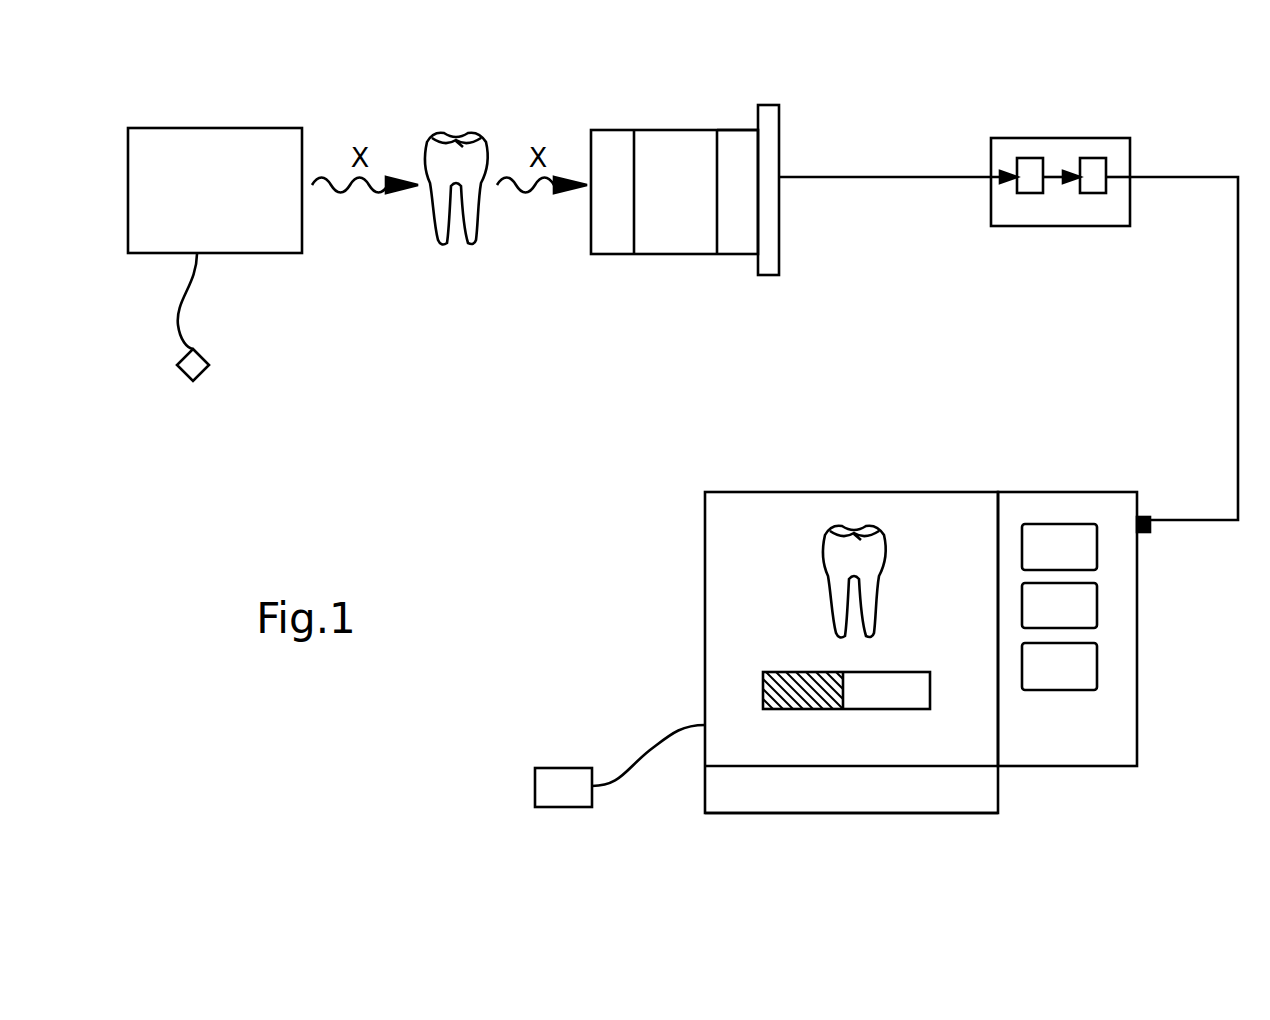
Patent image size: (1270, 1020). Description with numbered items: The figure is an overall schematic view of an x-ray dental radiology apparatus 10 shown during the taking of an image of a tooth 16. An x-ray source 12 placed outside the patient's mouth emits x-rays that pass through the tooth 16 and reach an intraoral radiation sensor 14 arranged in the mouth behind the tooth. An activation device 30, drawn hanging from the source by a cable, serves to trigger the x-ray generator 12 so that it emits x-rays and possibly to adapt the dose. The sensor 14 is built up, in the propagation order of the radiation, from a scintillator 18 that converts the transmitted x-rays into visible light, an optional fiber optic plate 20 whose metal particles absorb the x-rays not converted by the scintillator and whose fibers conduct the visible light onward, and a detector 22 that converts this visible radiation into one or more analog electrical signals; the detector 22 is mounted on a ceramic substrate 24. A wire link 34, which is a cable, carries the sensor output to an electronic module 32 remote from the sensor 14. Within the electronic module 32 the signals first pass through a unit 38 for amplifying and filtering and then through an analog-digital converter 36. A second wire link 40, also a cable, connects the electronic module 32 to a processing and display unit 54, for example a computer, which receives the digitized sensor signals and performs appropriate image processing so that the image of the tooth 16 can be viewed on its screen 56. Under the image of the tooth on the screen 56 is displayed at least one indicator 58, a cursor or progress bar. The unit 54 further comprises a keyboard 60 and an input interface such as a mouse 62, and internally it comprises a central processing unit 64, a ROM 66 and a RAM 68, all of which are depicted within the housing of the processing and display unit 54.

The x-ray dental radiology apparatus 10 is at (480, 392).
The x-ray source 12 is at (240, 128).
The intraoral radiation sensor 14 is at (675, 209).
The tooth 16 is at (446, 245).
The scintillator 18 is at (612, 130).
The fiber optic plate 20 is at (668, 130).
The detector 22 is at (735, 130).
The ceramic substrate 24 is at (780, 137).
The activation device 30 is at (205, 378).
The electronic module 32 is at (1095, 169).
The wire link 34 is at (899, 180).
The analog-digital converter 36 is at (1094, 193).
The amplifying and filtering unit 38 is at (1027, 158).
The wire link 40 is at (1238, 322).
The processing and display unit 54 is at (865, 685).
The screen 56 is at (705, 578).
The indicator 58 is at (790, 672).
The keyboard 60 is at (705, 808).
The mouse 62 is at (551, 800).
The central processing unit 64 is at (1097, 555).
The ROM 66 is at (1097, 615).
The RAM 68 is at (1100, 680).